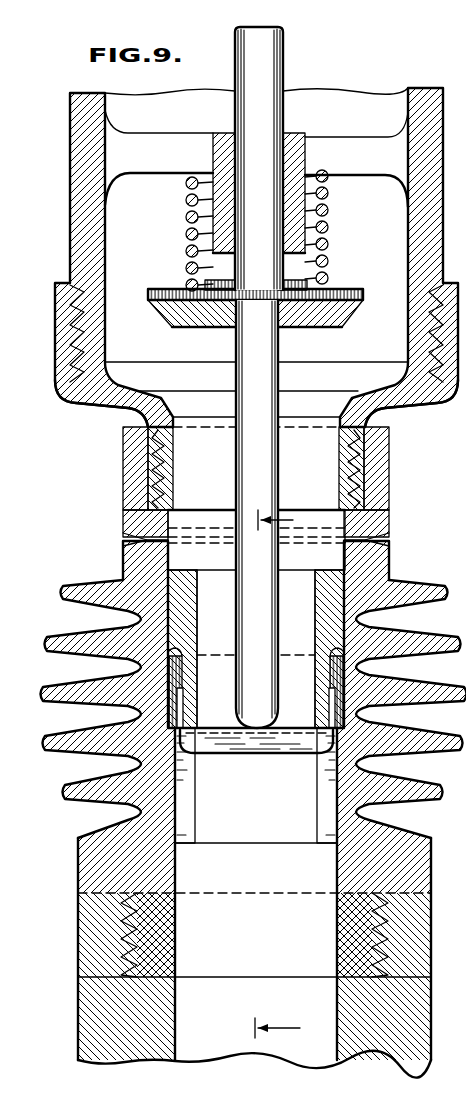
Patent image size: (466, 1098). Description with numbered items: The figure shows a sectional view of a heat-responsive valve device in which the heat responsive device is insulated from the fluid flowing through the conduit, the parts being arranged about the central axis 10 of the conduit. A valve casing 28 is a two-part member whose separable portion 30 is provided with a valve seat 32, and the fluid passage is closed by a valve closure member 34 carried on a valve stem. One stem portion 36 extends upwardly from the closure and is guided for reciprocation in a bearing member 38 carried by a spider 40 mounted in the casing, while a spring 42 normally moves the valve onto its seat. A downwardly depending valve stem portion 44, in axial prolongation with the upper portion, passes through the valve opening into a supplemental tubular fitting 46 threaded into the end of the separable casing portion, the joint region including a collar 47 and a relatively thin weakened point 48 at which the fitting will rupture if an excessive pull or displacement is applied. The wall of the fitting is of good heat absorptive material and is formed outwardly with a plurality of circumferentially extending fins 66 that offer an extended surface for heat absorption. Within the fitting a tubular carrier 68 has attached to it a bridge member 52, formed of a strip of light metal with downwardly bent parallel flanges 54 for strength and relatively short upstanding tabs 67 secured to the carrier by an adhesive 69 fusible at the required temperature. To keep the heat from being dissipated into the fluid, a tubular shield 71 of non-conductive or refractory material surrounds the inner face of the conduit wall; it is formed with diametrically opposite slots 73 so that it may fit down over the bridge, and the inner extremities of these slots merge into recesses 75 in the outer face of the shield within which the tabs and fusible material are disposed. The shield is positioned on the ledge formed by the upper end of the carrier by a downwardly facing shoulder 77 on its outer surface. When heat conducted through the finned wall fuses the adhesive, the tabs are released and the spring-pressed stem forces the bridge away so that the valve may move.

The axis of the arrester 10 is at (265, 774).
The valve casing 28 is at (82, 263).
The separable portion 30 is at (96, 392).
The valve seat 32 is at (174, 316).
The valve closure member 34 is at (361, 293).
The valve stem portion 36 is at (252, 270).
The bearing member 38 is at (291, 146).
The spider 40 is at (346, 156).
The spring 42 is at (324, 263).
The valve stem portion 44 is at (252, 596).
The supplemental tubular fitting 46 is at (385, 513).
The collar 47 is at (186, 558).
The weakened point 48 is at (150, 540).
The bridge member 52 is at (292, 729).
The flanges 54 is at (227, 743).
The fins 66 is at (448, 640).
The tabs 67 is at (185, 705).
The tubular carrier 68 is at (140, 710).
The adhesive 69 is at (163, 722).
The tubular shield 71 is at (188, 626).
The slots 73 is at (318, 798).
The recesses 75 is at (181, 684).
The shoulder 77 is at (172, 656).